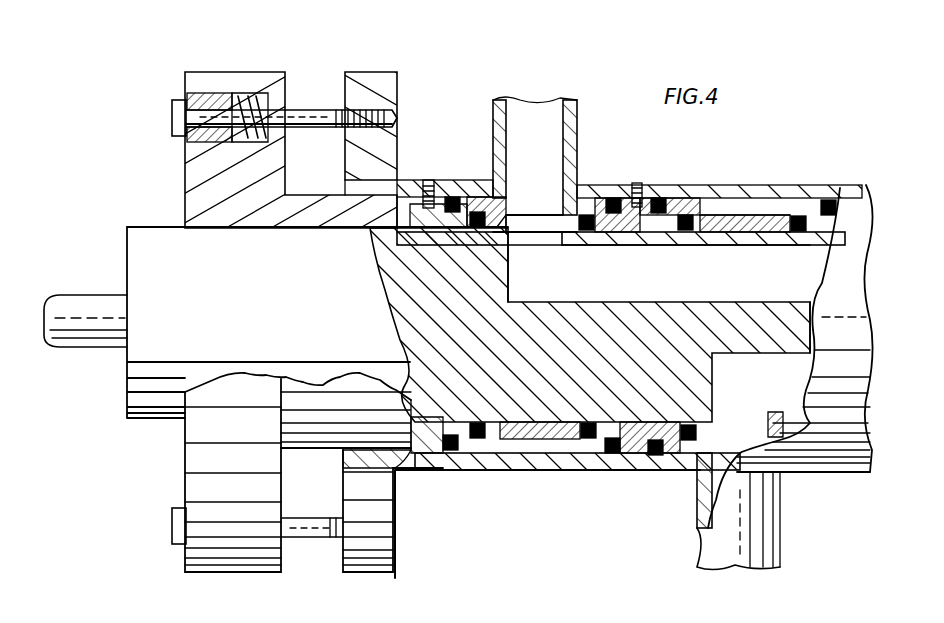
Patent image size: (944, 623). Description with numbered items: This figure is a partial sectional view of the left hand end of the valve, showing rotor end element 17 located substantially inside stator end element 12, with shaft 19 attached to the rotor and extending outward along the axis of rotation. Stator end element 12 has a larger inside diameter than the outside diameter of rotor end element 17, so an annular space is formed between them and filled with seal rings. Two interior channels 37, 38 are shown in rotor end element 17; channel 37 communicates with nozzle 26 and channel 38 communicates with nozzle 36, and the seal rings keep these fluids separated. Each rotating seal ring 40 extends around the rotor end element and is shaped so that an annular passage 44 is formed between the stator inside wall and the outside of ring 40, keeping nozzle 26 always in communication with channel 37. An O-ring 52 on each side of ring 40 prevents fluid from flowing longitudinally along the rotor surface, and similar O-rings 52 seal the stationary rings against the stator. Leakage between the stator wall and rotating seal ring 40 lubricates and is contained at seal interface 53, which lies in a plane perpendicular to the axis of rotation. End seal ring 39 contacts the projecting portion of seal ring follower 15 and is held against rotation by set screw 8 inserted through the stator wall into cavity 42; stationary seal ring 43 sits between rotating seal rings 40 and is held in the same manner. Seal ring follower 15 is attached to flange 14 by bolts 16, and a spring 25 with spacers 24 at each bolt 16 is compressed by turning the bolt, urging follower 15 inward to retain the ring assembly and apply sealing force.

The set screw 8 is at (432, 185).
The stator end element 12 is at (860, 188).
The flange 14 is at (372, 72).
The seal ring follower 15 is at (233, 72).
The bolt 16 is at (172, 112).
The rotor end element 17 is at (148, 226).
The shaft 19 is at (97, 295).
The spacer 24 is at (198, 142).
The spring 25 is at (262, 138).
The nozzle 26 is at (577, 120).
The nozzle 36 is at (782, 535).
The interior channel 37 is at (531, 325).
The interior channel 38 is at (758, 381).
The end seal ring 39 is at (410, 228).
The rotating seal ring 40 is at (500, 236).
The cavity 42 is at (420, 195).
The stationary seal ring 43 is at (622, 228).
The annular passage 44 is at (540, 195).
The O-ring 52 is at (452, 198).
The seal interface 53 is at (818, 200).